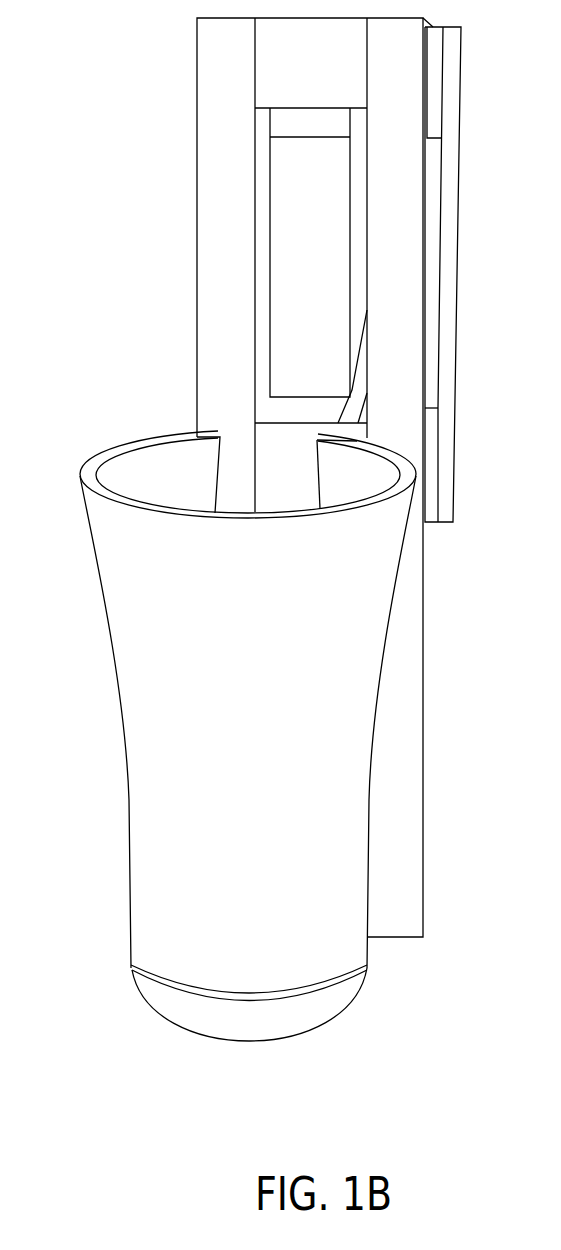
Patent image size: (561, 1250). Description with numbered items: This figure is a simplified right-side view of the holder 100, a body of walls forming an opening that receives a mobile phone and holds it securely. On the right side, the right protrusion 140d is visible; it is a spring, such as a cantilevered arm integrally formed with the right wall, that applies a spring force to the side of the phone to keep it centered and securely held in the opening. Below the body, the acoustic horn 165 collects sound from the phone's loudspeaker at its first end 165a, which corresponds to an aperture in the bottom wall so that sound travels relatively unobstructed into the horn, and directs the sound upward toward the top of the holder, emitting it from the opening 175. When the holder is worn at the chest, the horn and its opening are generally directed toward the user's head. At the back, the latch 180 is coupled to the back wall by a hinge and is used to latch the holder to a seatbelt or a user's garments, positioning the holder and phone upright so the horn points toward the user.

The holder 100 is at (111, 1106).
The right protrusion 140d is at (337, 321).
The acoustic horn 165 is at (310, 655).
The first end of acoustic horn 165a is at (363, 997).
The opening of the acoustic horn 175 is at (175, 462).
The latch 180 is at (460, 392).